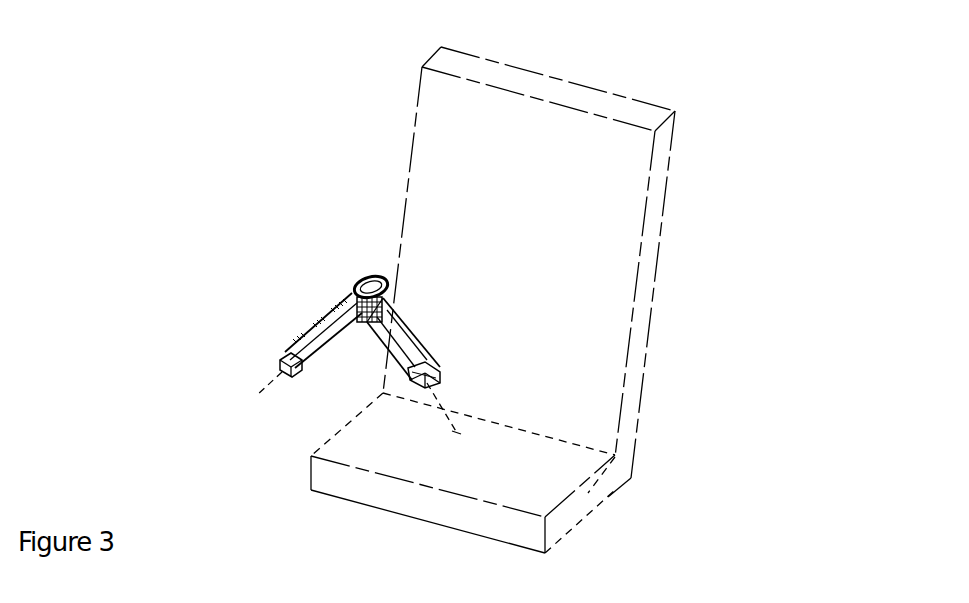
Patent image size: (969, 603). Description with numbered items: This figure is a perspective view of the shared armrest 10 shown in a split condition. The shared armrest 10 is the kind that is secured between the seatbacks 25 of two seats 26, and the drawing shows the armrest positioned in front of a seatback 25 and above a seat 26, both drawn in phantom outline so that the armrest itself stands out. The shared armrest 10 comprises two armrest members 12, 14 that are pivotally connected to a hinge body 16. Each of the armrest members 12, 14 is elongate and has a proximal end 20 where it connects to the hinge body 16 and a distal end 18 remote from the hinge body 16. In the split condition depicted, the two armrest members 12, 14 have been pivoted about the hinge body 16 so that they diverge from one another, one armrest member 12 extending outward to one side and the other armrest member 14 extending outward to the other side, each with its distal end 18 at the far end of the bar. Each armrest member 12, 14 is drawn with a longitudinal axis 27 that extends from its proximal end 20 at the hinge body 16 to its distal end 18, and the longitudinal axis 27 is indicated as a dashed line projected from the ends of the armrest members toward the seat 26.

The shared armrest 10 is at (317, 294).
The armrest member 12 is at (292, 345).
The armrest member 14 is at (407, 350).
The hinge body 16 is at (372, 277).
The distal end 18 is at (276, 368).
The proximal end 20 is at (346, 288).
The seatback 25 is at (663, 190).
The seat 26 is at (592, 497).
The longitudinal axis 27 is at (257, 393).